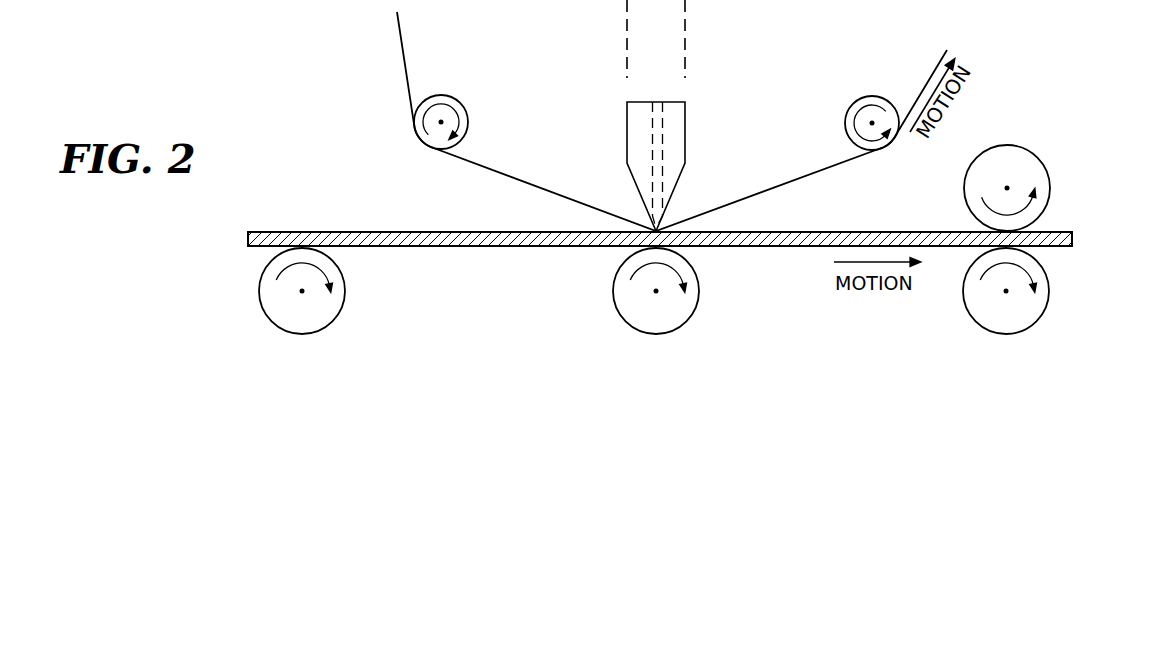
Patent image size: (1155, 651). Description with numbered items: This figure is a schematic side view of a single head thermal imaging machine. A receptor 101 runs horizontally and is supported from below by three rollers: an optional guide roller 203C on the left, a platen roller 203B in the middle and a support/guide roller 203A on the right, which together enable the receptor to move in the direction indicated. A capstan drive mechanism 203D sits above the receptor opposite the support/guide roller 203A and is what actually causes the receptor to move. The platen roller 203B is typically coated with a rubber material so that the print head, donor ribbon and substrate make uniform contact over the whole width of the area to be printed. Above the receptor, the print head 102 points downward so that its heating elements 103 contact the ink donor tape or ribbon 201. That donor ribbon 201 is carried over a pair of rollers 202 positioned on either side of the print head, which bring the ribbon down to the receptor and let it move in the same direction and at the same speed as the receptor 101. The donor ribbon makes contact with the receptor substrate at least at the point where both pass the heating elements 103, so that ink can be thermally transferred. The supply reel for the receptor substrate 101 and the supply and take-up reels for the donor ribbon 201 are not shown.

The receptor 101 is at (340, 232).
The print head 102 is at (627, 129).
The heating elements 103 is at (663, 126).
The ink donor tape or ribbon 201 is at (403, 63).
The rollers 202 is at (447, 96).
The support/guide roller 203A is at (1040, 317).
The platen roller 203B is at (693, 309).
The guide roller 203C is at (338, 308).
The capstan drive mechanism 203D is at (1044, 167).